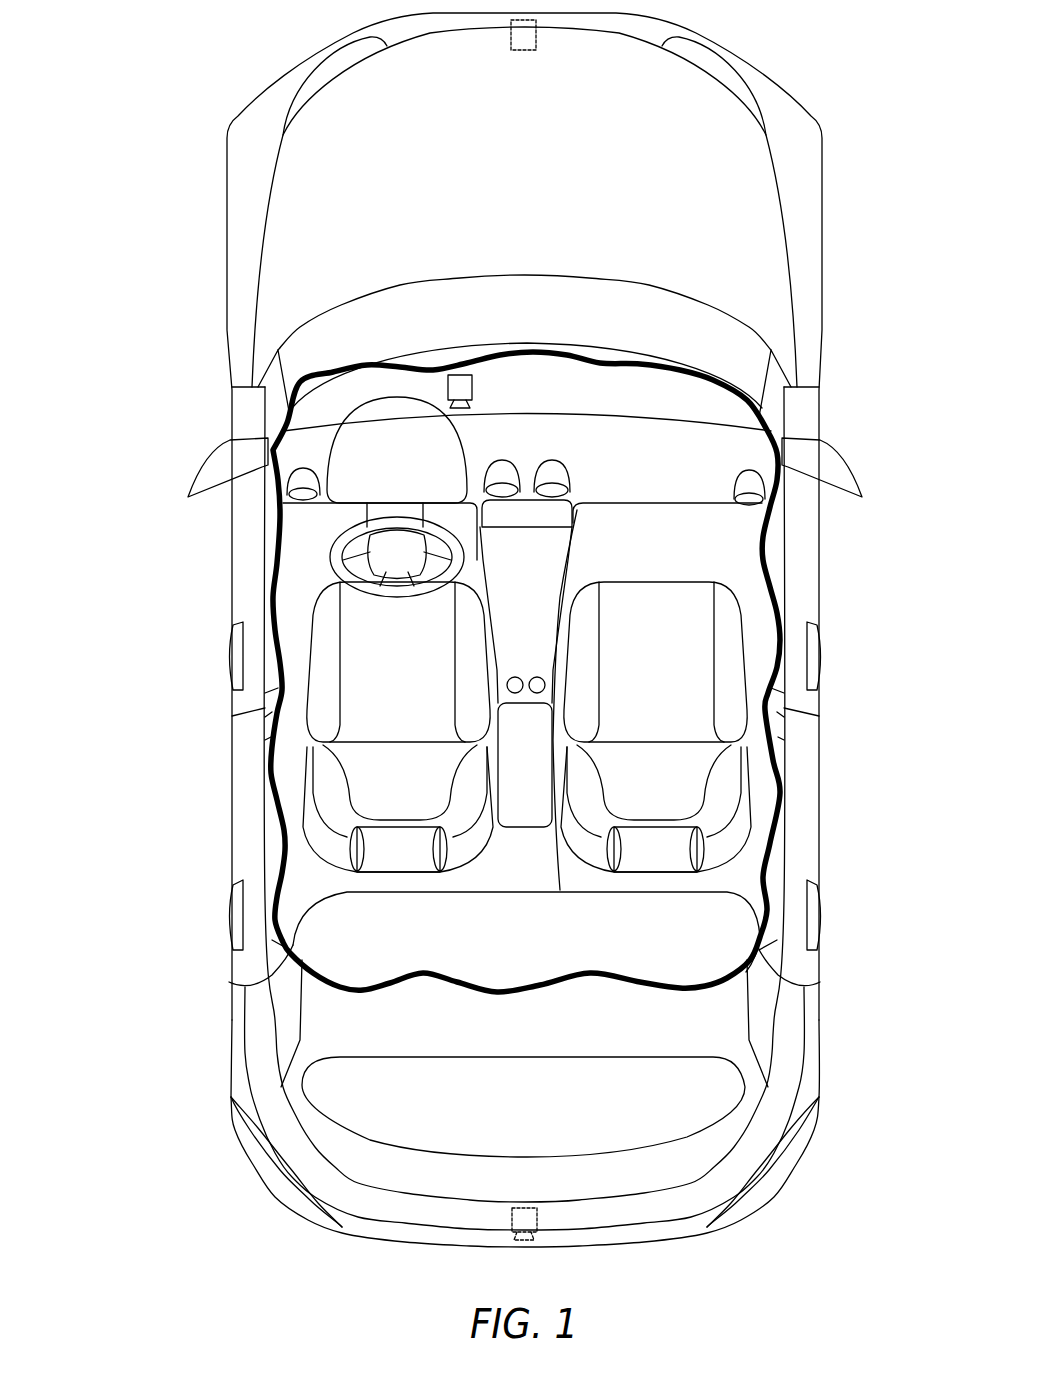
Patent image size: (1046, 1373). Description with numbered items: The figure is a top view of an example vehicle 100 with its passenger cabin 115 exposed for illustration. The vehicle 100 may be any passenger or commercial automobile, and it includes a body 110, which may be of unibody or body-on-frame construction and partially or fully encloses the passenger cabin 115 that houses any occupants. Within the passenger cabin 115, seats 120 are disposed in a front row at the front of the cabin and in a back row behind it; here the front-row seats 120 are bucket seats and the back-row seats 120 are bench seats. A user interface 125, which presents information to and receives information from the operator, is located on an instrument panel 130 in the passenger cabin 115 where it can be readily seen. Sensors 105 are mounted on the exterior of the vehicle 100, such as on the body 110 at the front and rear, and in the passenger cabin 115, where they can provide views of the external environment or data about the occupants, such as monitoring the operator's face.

The vehicle 100 is at (147, 87).
The sensors 105 is at (528, 50).
The body 110 is at (685, 1030).
The passenger cabin 115 is at (747, 600).
The seats 120 is at (327, 675).
The user interface 125 is at (543, 512).
The instrument panel 130 is at (673, 480).